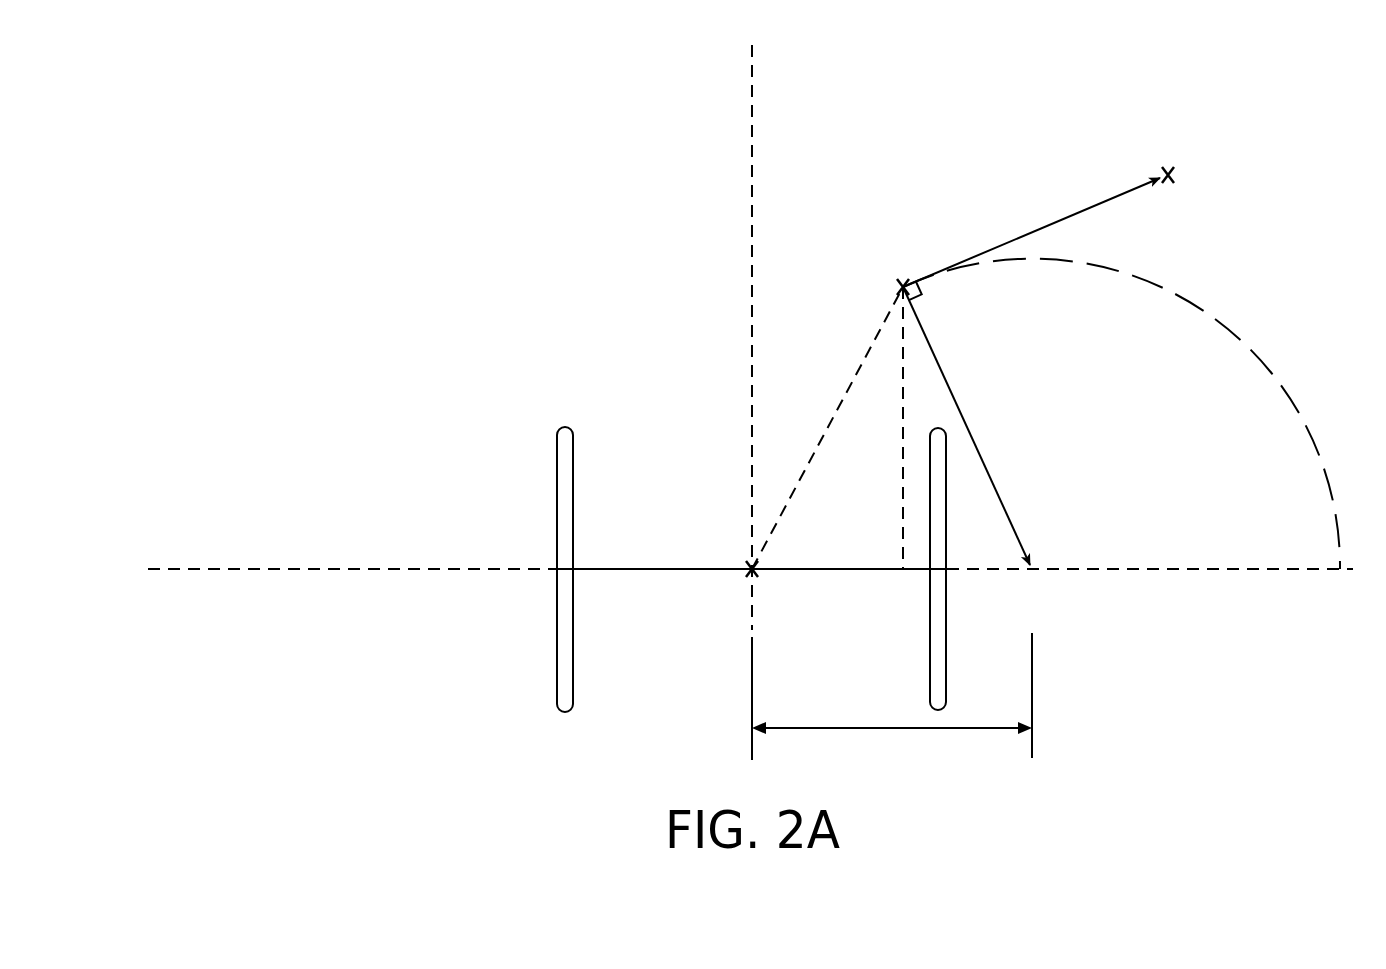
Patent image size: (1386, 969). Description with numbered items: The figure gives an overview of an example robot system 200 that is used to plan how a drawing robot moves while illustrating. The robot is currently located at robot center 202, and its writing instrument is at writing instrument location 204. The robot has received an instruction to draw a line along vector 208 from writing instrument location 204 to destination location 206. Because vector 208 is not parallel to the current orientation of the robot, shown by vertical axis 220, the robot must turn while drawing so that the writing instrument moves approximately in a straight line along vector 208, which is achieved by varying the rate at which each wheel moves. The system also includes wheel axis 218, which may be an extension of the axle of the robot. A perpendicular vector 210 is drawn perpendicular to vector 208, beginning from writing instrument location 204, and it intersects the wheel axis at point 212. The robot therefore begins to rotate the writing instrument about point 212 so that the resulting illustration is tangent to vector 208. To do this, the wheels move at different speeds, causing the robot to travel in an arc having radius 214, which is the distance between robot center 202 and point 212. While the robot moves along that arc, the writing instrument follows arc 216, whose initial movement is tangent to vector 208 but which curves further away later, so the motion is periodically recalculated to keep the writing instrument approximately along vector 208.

The robot system 200 is at (1272, 125).
The robot center 202 is at (767, 587).
The writing instrument location 204 is at (891, 282).
The destination location 206 is at (1153, 169).
The vector 208 is at (1018, 222).
The perpendicular vector 210 is at (980, 409).
The point 212 is at (1040, 582).
The radius 214 is at (912, 729).
The arc 216 is at (1180, 281).
The wheel axis 218 is at (370, 558).
The vertical axis 220 is at (773, 90).